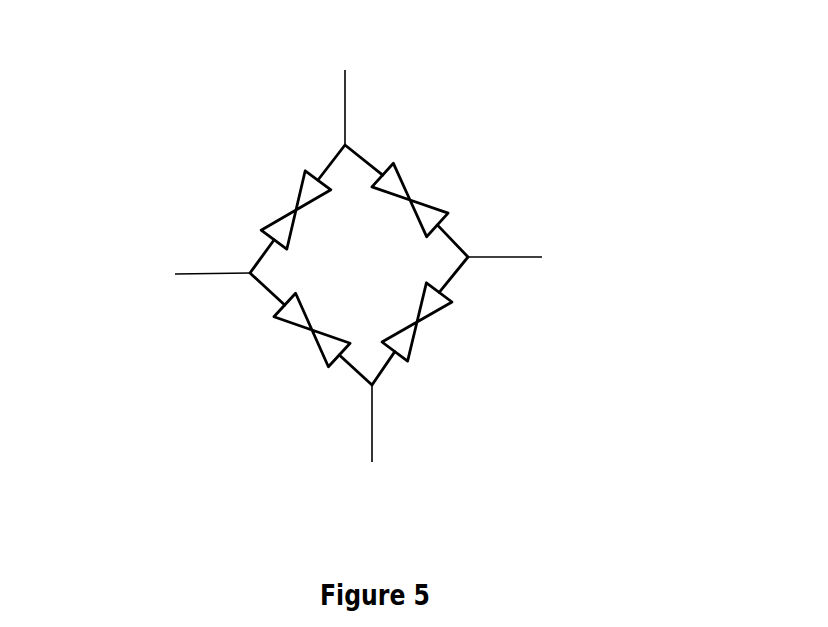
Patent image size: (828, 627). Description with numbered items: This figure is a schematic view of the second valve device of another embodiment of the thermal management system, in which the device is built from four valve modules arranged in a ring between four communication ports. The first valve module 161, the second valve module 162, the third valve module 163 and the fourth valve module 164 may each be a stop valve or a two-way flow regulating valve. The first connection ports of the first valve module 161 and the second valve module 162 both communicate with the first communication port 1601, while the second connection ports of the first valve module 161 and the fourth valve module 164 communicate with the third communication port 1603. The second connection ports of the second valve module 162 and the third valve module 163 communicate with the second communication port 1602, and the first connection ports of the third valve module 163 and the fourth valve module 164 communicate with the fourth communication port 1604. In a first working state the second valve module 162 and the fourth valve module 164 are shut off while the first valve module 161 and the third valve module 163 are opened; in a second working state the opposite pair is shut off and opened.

The first valve module 161 is at (418, 185).
The second valve module 162 is at (430, 332).
The third valve module 163 is at (298, 338).
The fourth valve module 164 is at (287, 192).
The first communication port 1601 is at (560, 264).
The second communication port 1602 is at (429, 437).
The third communication port 1603 is at (352, 77).
The fourth communication port 1604 is at (173, 279).